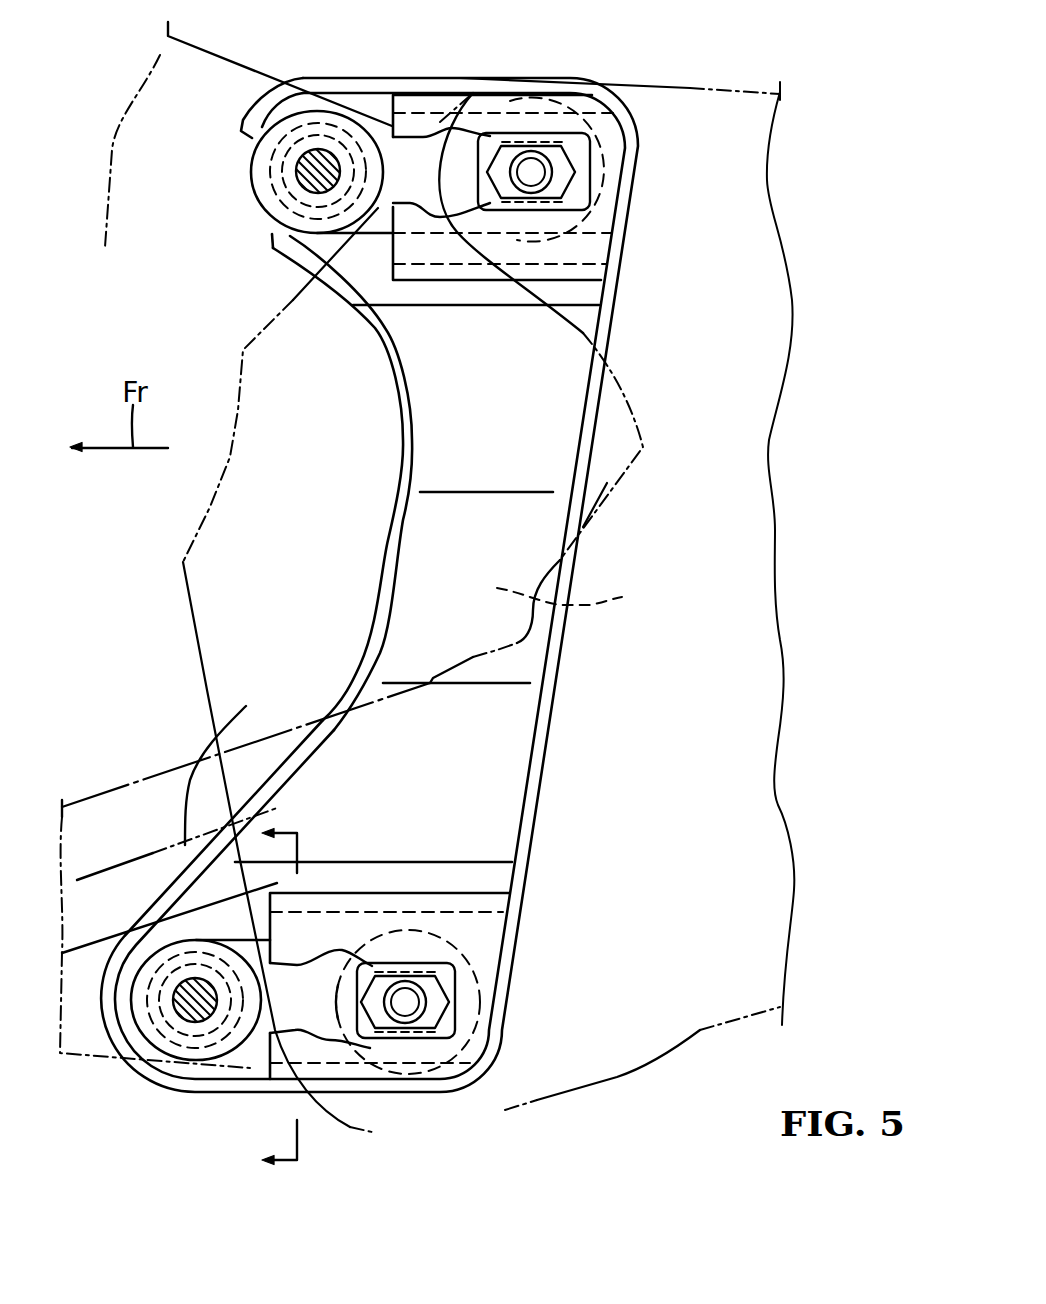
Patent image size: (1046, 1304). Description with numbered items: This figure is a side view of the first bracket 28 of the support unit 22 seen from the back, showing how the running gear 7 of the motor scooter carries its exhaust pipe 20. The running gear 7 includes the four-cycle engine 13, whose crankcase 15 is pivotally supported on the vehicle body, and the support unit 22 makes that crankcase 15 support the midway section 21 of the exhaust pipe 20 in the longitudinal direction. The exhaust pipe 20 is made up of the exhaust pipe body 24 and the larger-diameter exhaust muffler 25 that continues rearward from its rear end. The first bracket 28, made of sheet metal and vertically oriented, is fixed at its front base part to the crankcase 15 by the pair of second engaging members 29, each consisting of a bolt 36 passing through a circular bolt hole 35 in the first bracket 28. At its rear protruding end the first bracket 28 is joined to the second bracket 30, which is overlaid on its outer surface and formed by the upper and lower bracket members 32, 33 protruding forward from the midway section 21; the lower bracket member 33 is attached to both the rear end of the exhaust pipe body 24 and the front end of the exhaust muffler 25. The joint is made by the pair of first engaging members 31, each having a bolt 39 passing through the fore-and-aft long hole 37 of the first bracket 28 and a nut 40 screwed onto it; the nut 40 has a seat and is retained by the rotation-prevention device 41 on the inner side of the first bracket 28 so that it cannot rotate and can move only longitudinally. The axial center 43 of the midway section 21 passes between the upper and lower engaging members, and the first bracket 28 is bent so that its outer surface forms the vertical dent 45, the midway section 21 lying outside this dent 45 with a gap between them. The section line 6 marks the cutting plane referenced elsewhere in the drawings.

The running gear 7 is at (680, 60).
The four-cycle engine 13 is at (210, 51).
The crankcase 15 is at (240, 68).
The exhaust pipe 20 is at (100, 786).
The midway section 21 is at (453, 670).
The support unit 22 is at (597, 60).
The exhaust pipe body 24 is at (156, 775).
The exhaust muffler 25 is at (540, 573).
The first bracket 28 is at (401, 427).
The second engaging members 29 is at (286, 173).
The second bracket 30 is at (553, 70).
The first engaging members 31 is at (583, 151).
The bracket member 32 is at (583, 333).
The bracket member 33 is at (507, 1130).
The bolt hole 35 is at (305, 191).
The bolt 36 is at (275, 229).
The long hole 37 is at (610, 200).
The bolt 39 is at (530, 180).
The nut 40 is at (476, 192).
The rotation-prevention device 41 is at (597, 237).
The axial center 43 is at (246, 706).
The dent 45 is at (580, 594).
The section line 6- 6 is at (294, 997).